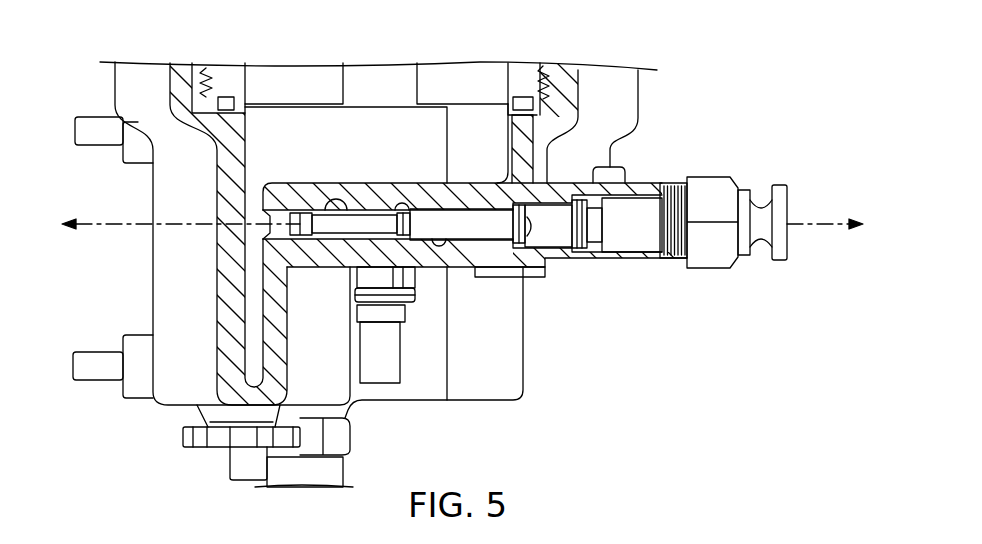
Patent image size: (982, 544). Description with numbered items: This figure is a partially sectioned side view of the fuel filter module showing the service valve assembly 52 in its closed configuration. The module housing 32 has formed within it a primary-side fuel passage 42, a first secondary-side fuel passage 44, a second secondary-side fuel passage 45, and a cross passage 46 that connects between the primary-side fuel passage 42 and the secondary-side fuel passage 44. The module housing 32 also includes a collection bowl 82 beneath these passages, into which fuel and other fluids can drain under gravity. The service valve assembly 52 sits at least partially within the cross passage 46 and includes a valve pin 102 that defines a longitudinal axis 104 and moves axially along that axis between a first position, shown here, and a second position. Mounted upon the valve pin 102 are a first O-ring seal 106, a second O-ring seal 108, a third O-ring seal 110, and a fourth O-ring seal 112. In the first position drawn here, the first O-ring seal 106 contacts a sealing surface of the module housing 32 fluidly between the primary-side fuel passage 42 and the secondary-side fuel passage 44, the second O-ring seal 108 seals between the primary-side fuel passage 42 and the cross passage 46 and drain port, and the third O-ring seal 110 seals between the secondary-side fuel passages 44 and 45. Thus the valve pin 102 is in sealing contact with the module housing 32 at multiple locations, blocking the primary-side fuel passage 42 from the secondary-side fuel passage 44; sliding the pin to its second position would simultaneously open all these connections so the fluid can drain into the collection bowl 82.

The module housing 32 is at (568, 77).
The primary-side fuel passage 42 is at (552, 203).
The secondary-side fuel passage 44 is at (333, 200).
The secondary-side fuel passage 45 is at (438, 250).
The cross passage 46 is at (445, 212).
The service valve assembly 52 is at (716, 169).
The collection bowl 82 is at (232, 283).
The valve pin 102 is at (548, 247).
The longitudinal axis 104 is at (818, 228).
The first O-ring seal 106 is at (398, 207).
The second O-ring seal 108 is at (322, 240).
The third O-ring seal 110 is at (513, 268).
The fourth O-ring seal 112 is at (578, 235).